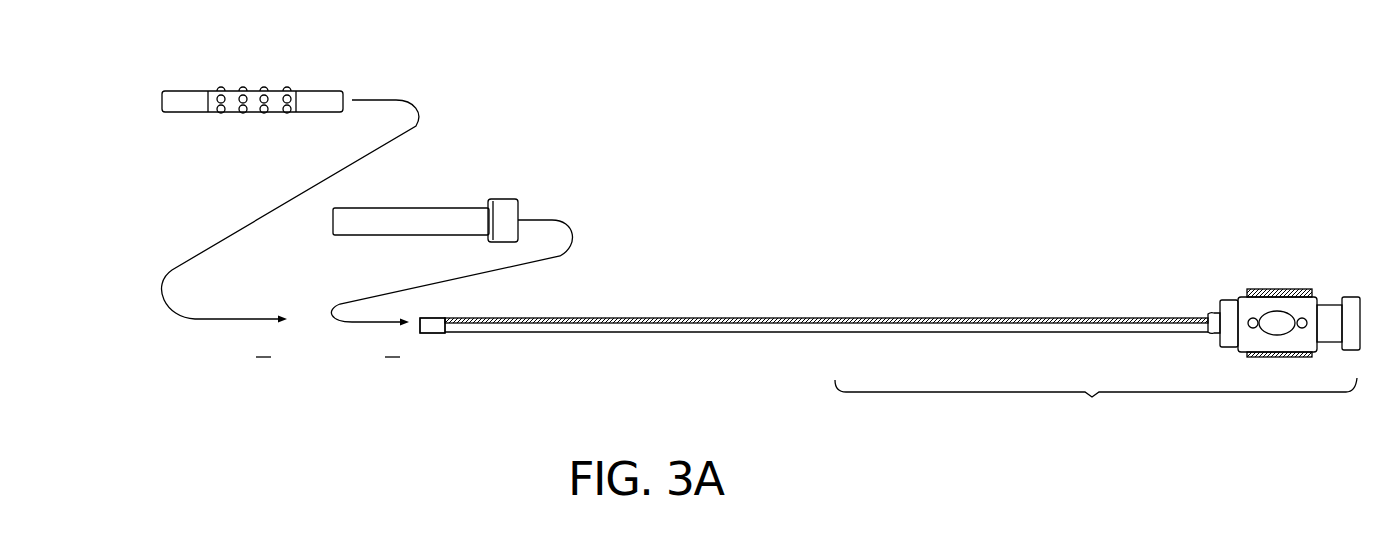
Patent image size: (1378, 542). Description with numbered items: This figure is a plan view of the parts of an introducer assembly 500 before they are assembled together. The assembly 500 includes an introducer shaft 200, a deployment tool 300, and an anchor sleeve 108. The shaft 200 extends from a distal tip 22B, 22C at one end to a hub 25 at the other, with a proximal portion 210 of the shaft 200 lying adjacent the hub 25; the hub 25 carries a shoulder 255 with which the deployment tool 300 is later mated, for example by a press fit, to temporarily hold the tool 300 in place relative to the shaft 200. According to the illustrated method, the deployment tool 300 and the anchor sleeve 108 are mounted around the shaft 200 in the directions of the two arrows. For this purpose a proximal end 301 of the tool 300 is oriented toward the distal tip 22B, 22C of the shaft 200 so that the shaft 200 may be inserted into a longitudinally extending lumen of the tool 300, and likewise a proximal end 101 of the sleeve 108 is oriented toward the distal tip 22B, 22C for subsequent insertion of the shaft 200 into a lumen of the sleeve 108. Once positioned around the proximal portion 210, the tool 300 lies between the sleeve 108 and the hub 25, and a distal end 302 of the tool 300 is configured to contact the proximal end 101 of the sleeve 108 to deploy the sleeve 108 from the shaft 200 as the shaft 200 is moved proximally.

The introducer assembly 500 is at (592, 170).
The paddle lead 108 is at (314, 62).
The proximal end 101 is at (337, 113).
The deployment tool 300 is at (438, 182).
The distal end 302 is at (335, 220).
The proximal end 301 is at (510, 238).
The introducer shaft 200 is at (730, 250).
The distal tip 22B is at (428, 334).
The distal tip 22C is at (474, 354).
The shoulder 255 is at (1220, 312).
The hub 25 is at (1270, 268).
The proximal portion 210 is at (1096, 404).